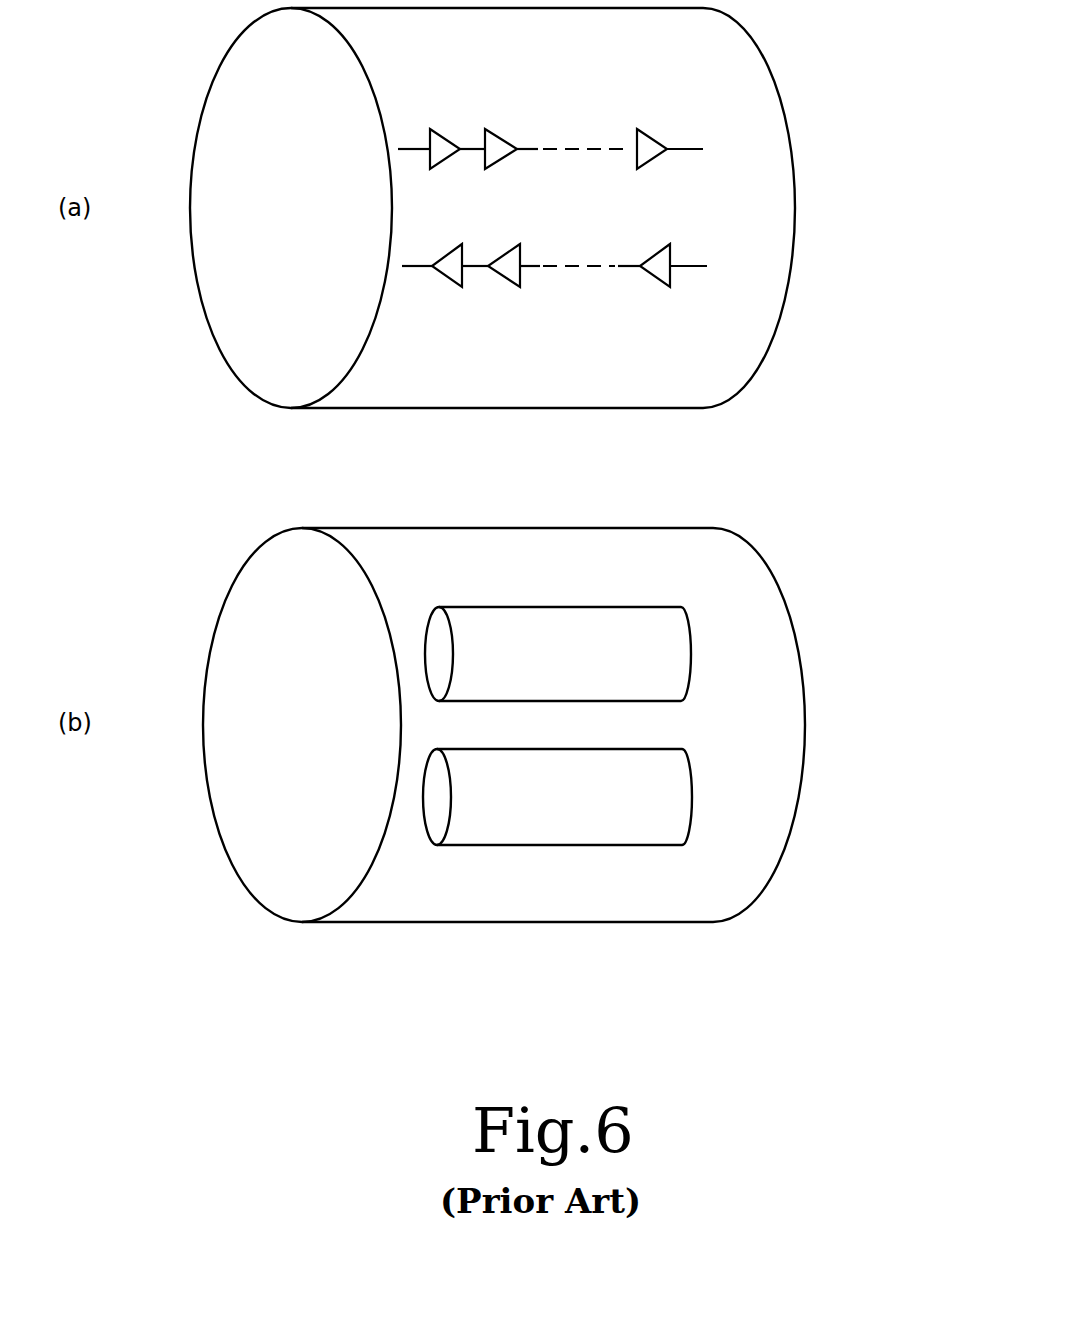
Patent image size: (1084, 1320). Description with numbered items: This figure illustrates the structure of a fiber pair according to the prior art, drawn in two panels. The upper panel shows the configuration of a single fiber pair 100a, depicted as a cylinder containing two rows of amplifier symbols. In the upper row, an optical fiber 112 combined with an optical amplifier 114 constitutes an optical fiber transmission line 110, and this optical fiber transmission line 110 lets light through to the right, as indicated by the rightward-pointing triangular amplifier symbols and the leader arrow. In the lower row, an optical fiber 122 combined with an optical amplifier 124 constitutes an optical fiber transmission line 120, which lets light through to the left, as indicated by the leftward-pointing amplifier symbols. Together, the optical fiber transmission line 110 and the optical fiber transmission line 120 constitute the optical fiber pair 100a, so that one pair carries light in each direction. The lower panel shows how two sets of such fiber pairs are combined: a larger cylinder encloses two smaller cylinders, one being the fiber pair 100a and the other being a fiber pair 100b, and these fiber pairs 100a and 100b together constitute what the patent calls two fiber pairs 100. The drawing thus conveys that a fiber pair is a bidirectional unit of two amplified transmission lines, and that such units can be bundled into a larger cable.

The two fiber pairs 100 is at (795, 630).
The optical fiber pair 100a is at (788, 118).
The fiber pair 100b is at (692, 770).
The optical fiber transmission line 110 is at (572, 113).
The optical fiber 112 is at (413, 151).
The optical amplifier 114 is at (450, 143).
The optical fiber transmission line 120 is at (581, 280).
The optical fiber 122 is at (420, 267).
The optical amplifier 124 is at (448, 277).